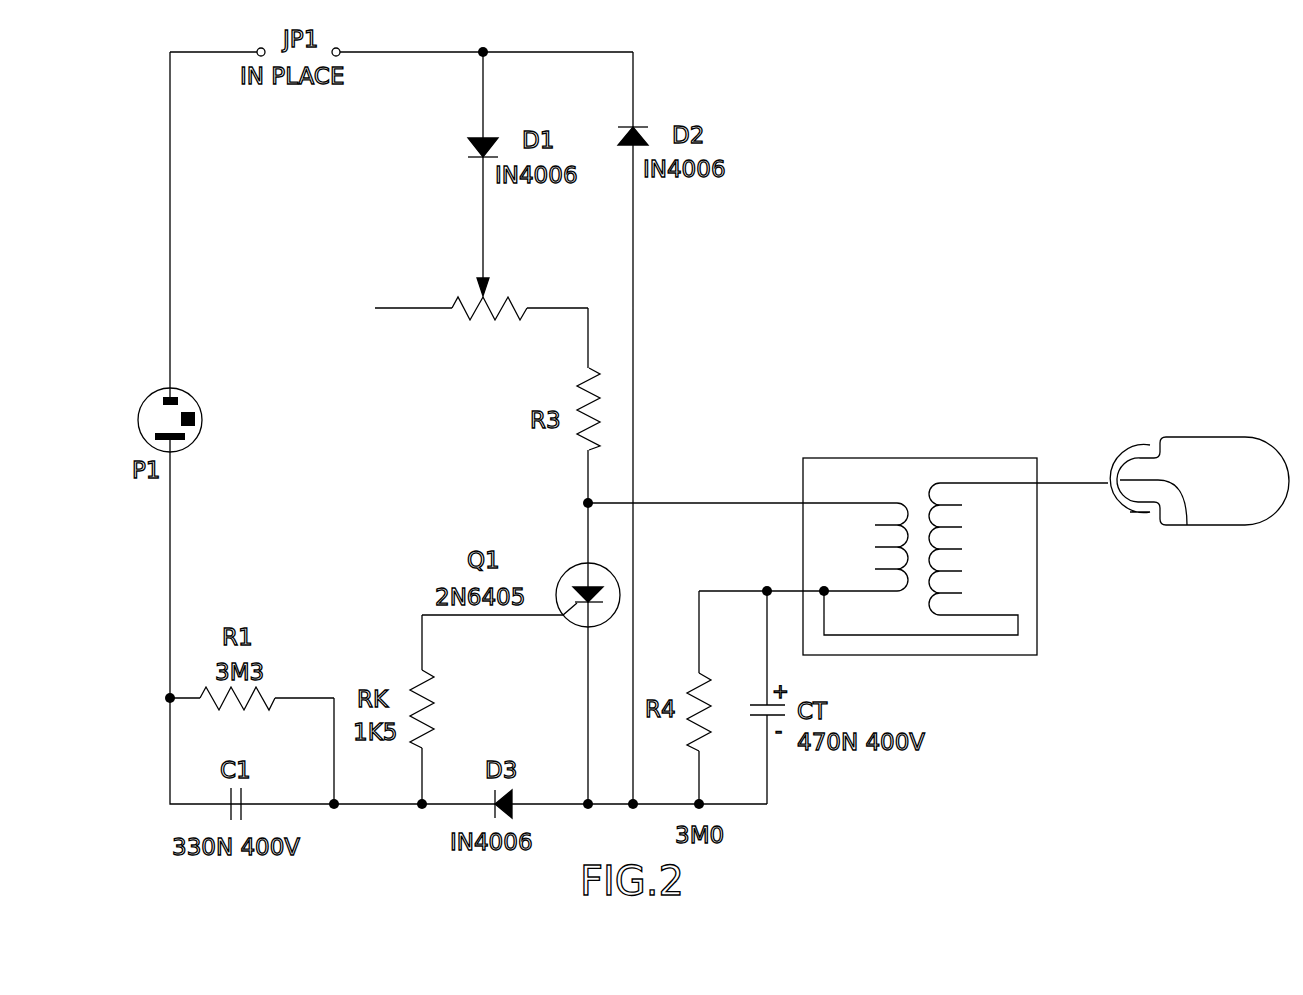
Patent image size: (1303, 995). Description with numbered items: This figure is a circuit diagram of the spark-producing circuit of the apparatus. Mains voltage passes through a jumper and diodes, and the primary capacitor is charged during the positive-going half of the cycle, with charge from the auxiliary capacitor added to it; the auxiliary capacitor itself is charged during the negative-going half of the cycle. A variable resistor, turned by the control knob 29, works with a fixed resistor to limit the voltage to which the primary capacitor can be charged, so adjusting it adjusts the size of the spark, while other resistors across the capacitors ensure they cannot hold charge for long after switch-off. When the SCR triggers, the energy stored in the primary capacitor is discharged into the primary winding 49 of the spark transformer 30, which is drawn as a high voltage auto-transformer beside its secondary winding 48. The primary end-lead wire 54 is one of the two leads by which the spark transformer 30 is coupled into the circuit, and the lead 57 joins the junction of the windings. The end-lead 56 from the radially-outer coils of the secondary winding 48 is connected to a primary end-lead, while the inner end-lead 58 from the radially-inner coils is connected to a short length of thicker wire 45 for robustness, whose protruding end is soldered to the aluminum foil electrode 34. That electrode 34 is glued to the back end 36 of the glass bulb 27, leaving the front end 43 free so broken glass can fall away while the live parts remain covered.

The control knob 29 is at (483, 295).
The spark transformer 30 is at (815, 455).
The primary end-lead wire 54 is at (763, 502).
The common winding lead 57 is at (787, 590).
The primary winding 49 is at (884, 528).
The secondary winding 48 is at (955, 527).
The secondary end-lead 56 is at (942, 636).
The inner end-lead 58 is at (1010, 483).
The thicker wire 45 is at (1090, 482).
The front end of the bulb 43 is at (1287, 480).
The electrode 34 is at (1130, 512).
The back end of the bulb 36 is at (1185, 525).
The glass bulb 27 is at (1227, 515).